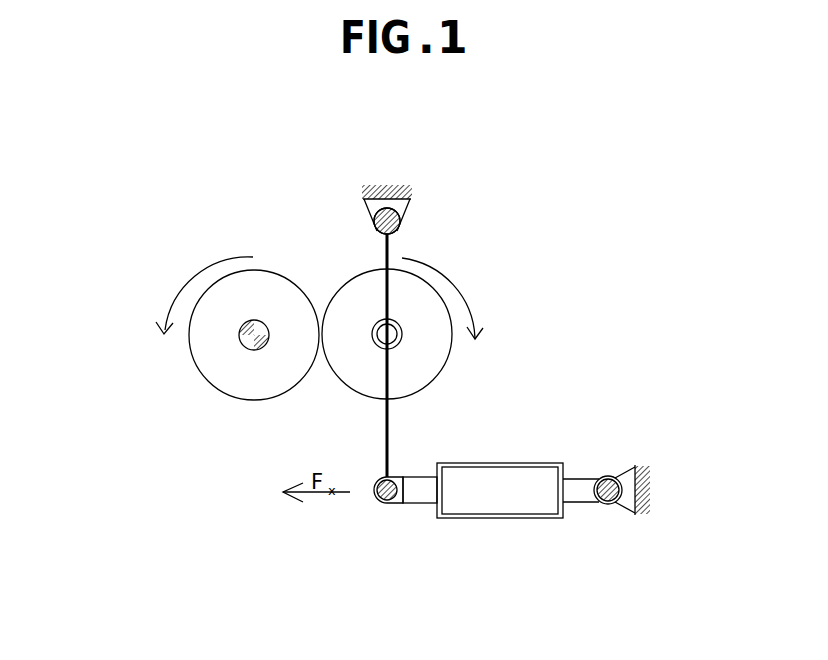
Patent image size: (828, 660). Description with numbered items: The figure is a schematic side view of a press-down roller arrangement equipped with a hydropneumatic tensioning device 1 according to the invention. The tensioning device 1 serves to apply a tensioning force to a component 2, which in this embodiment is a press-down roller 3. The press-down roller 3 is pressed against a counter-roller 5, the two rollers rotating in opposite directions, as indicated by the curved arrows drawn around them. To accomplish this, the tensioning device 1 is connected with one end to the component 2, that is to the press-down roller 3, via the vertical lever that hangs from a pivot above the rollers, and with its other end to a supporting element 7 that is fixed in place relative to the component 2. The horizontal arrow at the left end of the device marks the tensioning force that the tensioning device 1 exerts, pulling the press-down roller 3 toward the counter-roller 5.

The tensioning device 1 is at (500, 533).
The component 2 is at (455, 271).
The press-down roller 3 is at (420, 332).
The counter-roller 5 is at (225, 308).
The supporting element 7 is at (642, 487).